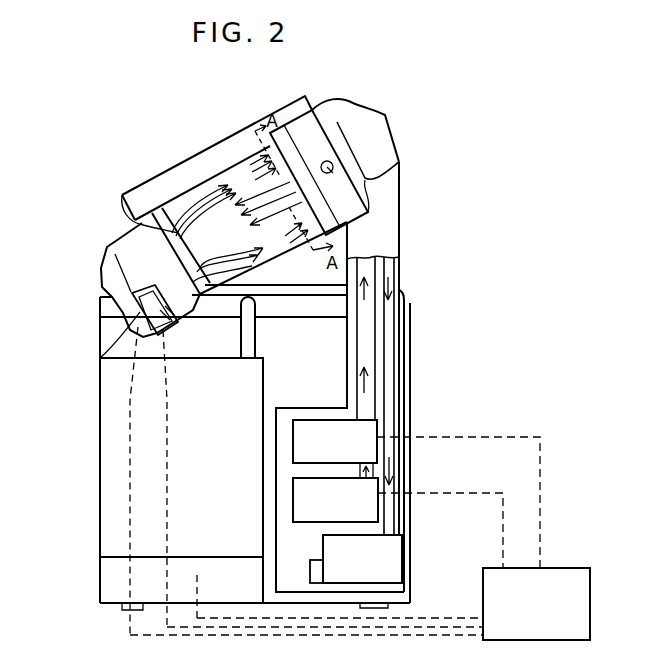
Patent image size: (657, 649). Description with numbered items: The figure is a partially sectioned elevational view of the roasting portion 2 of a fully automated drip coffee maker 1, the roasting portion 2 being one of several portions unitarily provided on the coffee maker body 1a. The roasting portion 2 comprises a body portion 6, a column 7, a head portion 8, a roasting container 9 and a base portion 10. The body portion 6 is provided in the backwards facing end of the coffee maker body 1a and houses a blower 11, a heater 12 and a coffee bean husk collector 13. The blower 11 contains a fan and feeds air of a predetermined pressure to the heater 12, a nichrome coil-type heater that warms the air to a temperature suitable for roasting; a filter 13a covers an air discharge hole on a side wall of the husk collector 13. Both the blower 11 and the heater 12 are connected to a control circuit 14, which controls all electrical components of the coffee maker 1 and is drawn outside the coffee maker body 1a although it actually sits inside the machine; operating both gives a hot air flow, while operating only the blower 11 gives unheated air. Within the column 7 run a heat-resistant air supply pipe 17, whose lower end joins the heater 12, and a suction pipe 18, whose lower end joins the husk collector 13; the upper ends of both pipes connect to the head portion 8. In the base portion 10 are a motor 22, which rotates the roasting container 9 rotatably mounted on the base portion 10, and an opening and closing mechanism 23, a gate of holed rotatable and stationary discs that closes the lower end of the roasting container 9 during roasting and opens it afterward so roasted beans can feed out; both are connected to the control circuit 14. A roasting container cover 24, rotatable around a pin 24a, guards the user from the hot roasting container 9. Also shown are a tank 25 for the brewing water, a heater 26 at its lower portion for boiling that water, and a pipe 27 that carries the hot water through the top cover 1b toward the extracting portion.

The coffee maker 1 is at (341, 79).
The coffee maker body 1a is at (90, 341).
The top cover 1b is at (100, 297).
The roasting portion 2 is at (413, 224).
The body portion 6 is at (300, 395).
The column 7 is at (382, 237).
The head portion 8 is at (377, 136).
The roasting container 9 is at (268, 237).
The base portion 10 is at (110, 238).
The blower 11 is at (303, 502).
The heater 12 is at (303, 438).
The coffee bean husk collector 13 is at (382, 562).
The filter 13a is at (313, 572).
The control circuit 14 is at (568, 568).
The air supply pipe 17 is at (363, 343).
The suction pipe 18 is at (388, 362).
The motor 22 is at (162, 317).
The opening and closing mechanism 23 is at (100, 358).
The roasting container cover 24 is at (204, 163).
The pin 24a is at (368, 178).
The tank 25 is at (115, 503).
The heater 26 is at (118, 571).
The pipe 27 is at (255, 322).